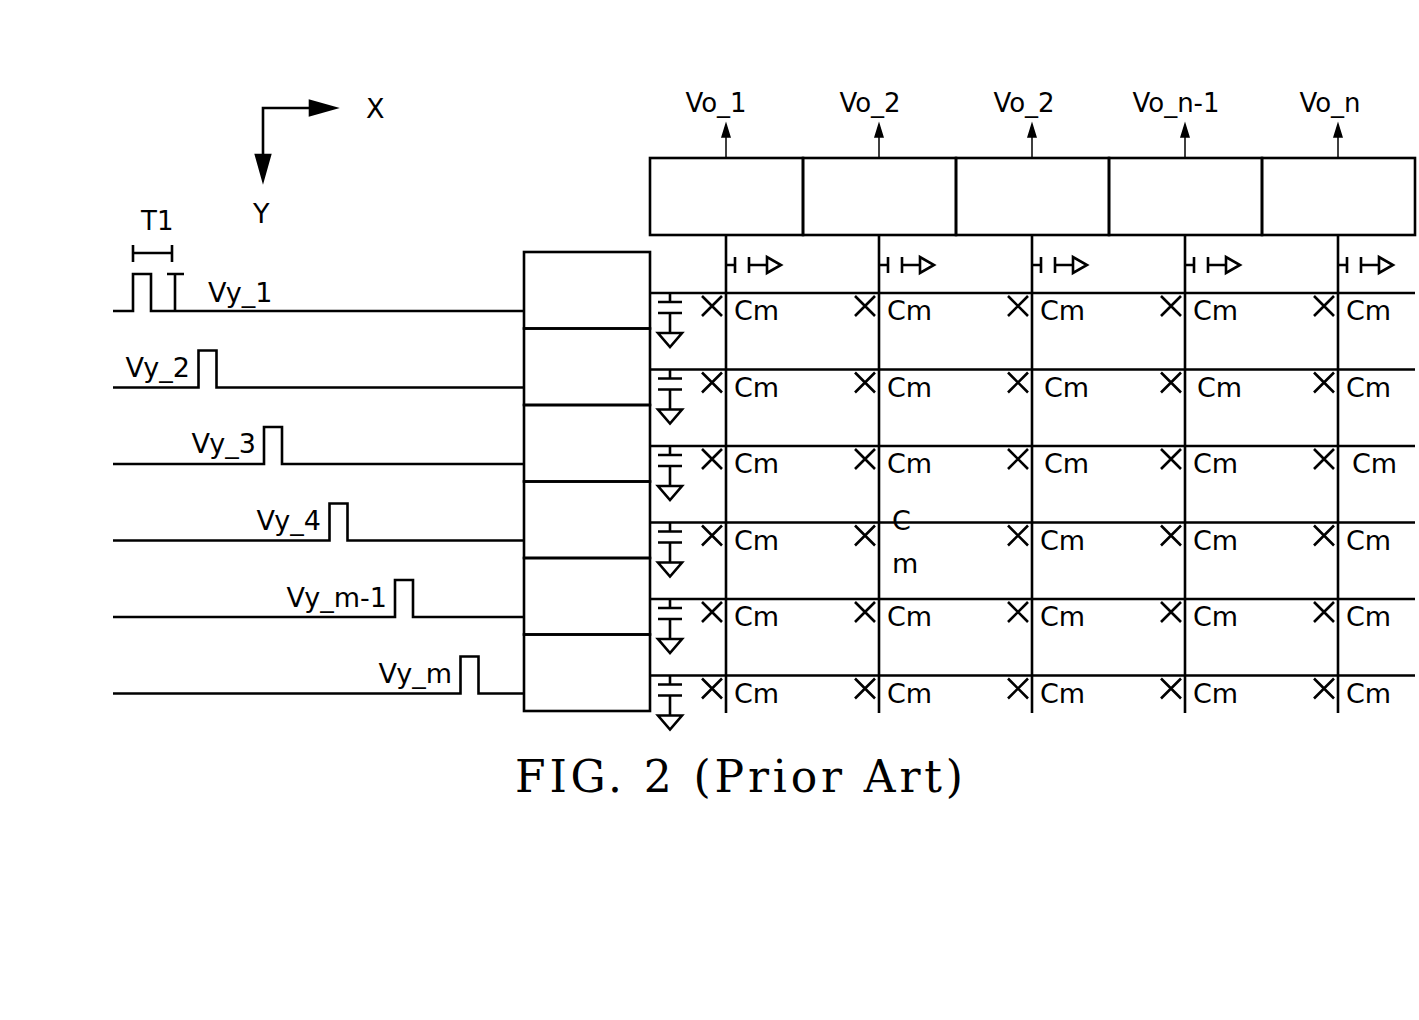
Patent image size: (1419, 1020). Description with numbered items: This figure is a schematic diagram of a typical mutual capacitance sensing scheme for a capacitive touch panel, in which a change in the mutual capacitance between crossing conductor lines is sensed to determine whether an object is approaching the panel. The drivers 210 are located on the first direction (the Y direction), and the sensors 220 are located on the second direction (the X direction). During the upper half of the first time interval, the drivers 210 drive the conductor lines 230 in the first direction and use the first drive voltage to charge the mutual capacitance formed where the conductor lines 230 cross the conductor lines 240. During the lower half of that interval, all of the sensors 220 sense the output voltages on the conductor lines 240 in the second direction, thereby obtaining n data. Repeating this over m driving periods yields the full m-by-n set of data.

The drivers 210 is at (537, 481).
The sensors 220 is at (1003, 174).
The conductor lines in the first direction 230 is at (693, 292).
The conductor lines in the second direction 240 is at (714, 313).